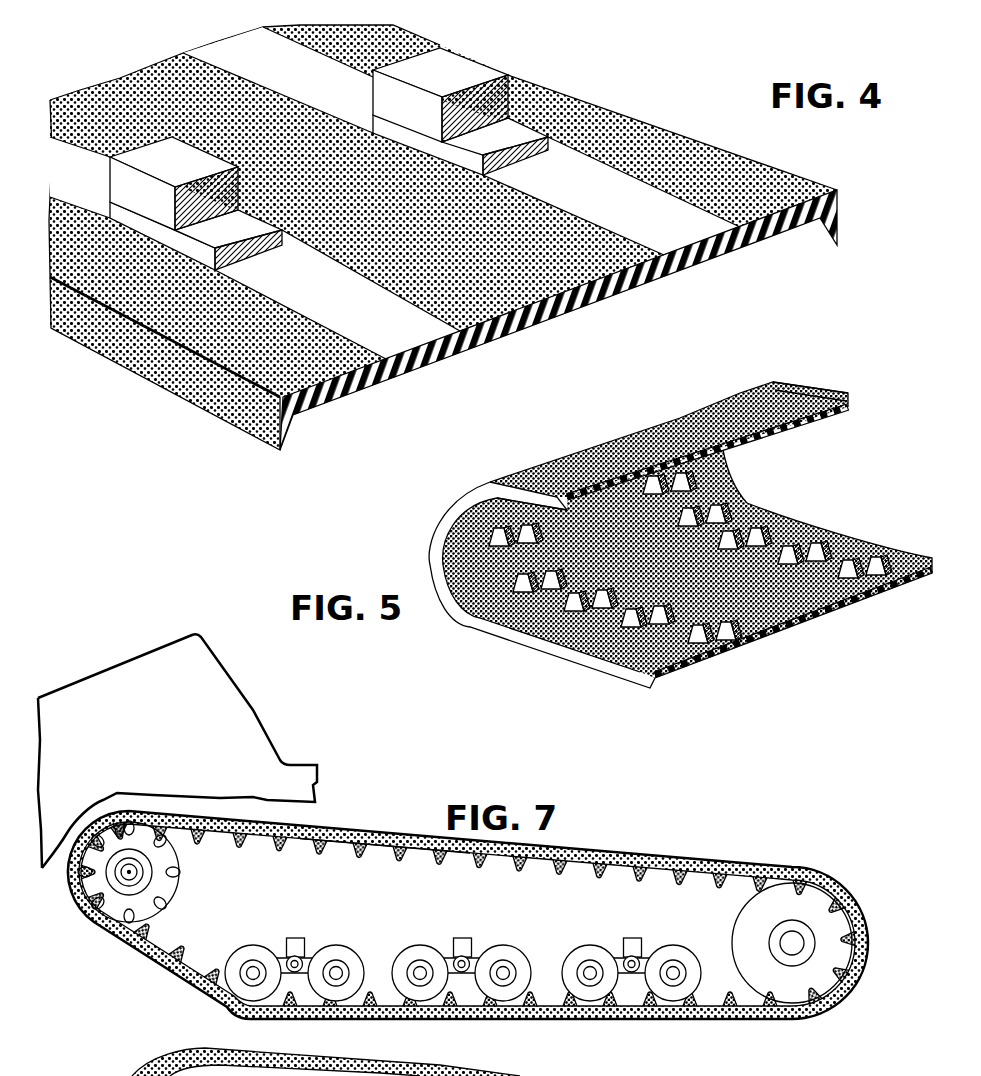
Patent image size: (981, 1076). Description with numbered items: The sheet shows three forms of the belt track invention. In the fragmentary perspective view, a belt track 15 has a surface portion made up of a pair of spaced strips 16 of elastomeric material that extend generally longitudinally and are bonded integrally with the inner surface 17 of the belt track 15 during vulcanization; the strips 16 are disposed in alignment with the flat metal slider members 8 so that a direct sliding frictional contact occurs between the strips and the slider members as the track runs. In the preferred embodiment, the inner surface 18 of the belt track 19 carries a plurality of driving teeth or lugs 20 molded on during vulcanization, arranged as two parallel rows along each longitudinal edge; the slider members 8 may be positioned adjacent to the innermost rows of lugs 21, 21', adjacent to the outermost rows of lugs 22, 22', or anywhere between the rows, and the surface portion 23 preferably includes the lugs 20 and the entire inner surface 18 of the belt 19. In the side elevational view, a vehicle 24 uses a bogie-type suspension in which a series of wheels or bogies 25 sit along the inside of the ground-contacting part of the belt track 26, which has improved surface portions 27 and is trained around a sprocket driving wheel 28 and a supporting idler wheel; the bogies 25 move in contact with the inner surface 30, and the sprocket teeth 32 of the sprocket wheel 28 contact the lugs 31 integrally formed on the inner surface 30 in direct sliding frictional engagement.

In FIG. 4, the slider member 8 is at (515, 132).
In FIG. 4, the belt track 15 is at (178, 377).
In FIG. 4, the spaced strips 16 is at (596, 182).
In FIG. 4, the inner surface 17 is at (800, 187).
In FIG. 5, the inner surface 18 is at (850, 540).
In FIG. 5, the belt track 19 is at (804, 372).
In FIG. 5, the driving teeth or lugs 20 is at (726, 498).
In FIG. 5, the innermost row of lugs 21 is at (759, 651).
In FIG. 5, the innermost row of lugs 21' is at (865, 607).
In FIG. 5, the outermost row of lugs 22 is at (718, 665).
In FIG. 5, the outermost row of lugs 22' is at (881, 594).
In FIG. 5, the surface portion 23 is at (633, 653).
In FIG. 7, the vehicle 24 is at (107, 660).
In FIG. 7, the wheels or bogies 25 is at (333, 955).
In FIG. 7, the belt track 26 is at (756, 858).
In FIG. 7, the improved surface portions 27 is at (190, 830).
In FIG. 7, the sprocket driving wheel 28 is at (97, 830).
In FIG. 7, the inner surface 30 is at (386, 849).
In FIG. 7, the driving teeth or lugs 31 is at (210, 972).
In FIG. 7, the sprocket teeth 32 is at (176, 876).